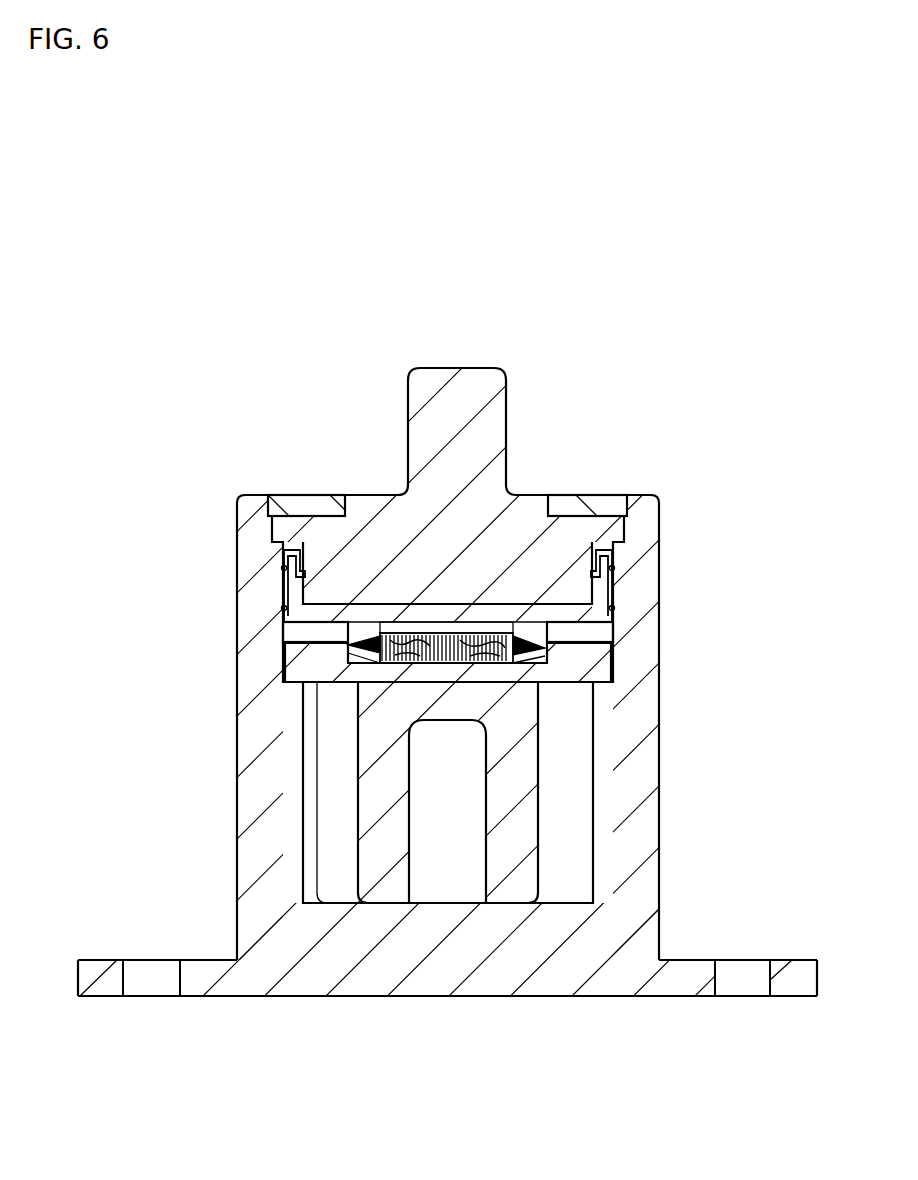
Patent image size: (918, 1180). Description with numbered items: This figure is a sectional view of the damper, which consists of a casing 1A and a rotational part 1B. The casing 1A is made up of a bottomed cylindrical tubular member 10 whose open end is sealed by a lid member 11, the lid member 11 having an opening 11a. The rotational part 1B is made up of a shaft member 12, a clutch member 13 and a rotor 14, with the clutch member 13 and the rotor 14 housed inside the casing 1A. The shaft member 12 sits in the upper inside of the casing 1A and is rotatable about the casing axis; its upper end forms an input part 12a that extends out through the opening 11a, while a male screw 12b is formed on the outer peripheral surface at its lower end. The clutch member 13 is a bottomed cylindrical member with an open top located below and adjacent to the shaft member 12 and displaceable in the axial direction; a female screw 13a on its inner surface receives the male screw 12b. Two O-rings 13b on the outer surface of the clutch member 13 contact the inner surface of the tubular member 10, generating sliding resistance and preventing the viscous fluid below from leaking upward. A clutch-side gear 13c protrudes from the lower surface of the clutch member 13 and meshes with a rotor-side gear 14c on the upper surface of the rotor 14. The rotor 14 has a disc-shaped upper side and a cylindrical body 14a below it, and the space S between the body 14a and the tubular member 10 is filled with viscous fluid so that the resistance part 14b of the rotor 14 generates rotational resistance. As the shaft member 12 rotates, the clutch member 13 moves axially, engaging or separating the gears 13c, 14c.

The casing 1A is at (203, 555).
The rotational part 1B is at (309, 441).
The tubular member 10 is at (642, 894).
The lid member 11 is at (596, 504).
The opening 11a is at (347, 496).
The shaft member 12 is at (324, 537).
The input part 12a is at (423, 414).
The male screw 12b is at (293, 566).
The clutch member 13 is at (291, 594).
The female screw 13a is at (592, 592).
The O-ring 13b is at (615, 609).
The clutch-side gear 13c is at (349, 639).
The rotor 14 is at (313, 665).
The body 14a is at (383, 804).
The resistance part 14b is at (333, 750).
The rotor-side gear 14c is at (546, 650).
The space S is at (566, 748).